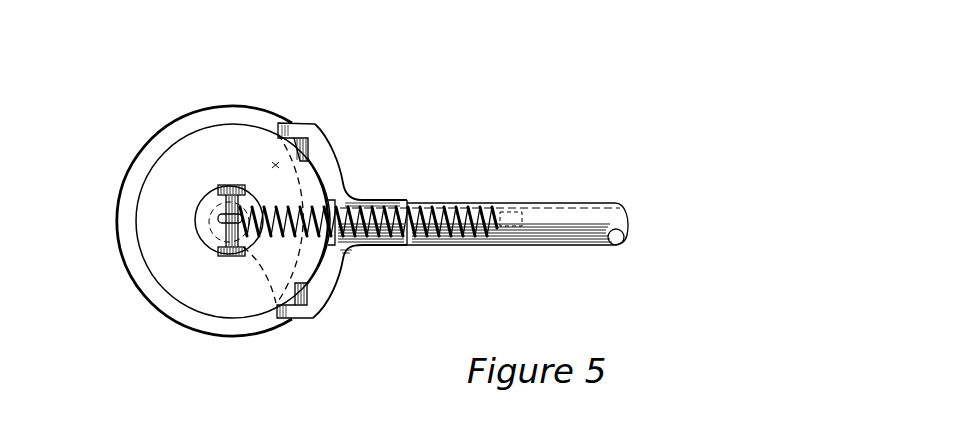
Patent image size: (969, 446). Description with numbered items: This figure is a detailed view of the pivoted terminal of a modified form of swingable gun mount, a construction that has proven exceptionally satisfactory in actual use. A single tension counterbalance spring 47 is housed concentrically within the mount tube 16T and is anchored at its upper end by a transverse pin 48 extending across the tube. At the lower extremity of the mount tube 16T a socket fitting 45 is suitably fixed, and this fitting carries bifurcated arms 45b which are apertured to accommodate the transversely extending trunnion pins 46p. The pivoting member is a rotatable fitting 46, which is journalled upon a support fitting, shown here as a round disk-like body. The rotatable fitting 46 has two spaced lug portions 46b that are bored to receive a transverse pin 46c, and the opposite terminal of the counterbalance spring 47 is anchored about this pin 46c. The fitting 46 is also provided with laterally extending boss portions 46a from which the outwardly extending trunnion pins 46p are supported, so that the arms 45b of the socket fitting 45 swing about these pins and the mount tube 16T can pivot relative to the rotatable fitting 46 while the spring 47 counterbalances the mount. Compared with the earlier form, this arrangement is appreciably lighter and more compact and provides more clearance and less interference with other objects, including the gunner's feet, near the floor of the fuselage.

The socket fitting 45 is at (362, 200).
The bifurcated arms 45b is at (245, 196).
The rotatable fitting 46 is at (165, 165).
The boss portions 46a is at (308, 138).
The lug portions 46b is at (216, 249).
The transverse pin 46c is at (220, 218).
The trunnion pins 46p is at (295, 319).
The tension counterbalance spring 47 is at (272, 252).
The transverse pin 48 is at (512, 240).
The mount tube 16T is at (558, 221).